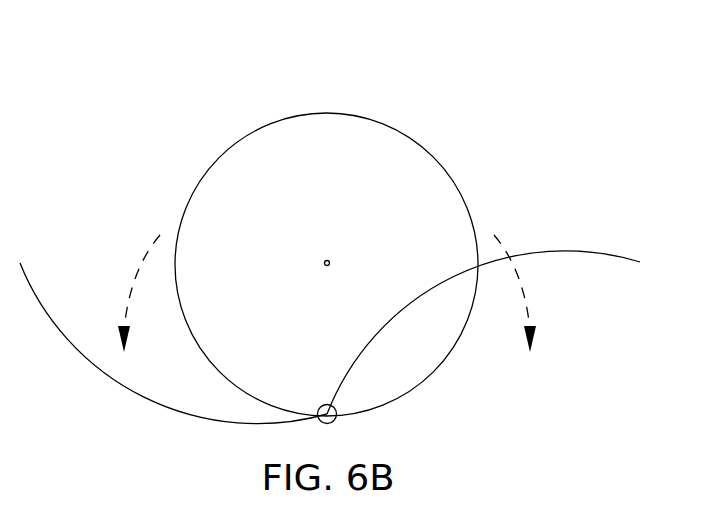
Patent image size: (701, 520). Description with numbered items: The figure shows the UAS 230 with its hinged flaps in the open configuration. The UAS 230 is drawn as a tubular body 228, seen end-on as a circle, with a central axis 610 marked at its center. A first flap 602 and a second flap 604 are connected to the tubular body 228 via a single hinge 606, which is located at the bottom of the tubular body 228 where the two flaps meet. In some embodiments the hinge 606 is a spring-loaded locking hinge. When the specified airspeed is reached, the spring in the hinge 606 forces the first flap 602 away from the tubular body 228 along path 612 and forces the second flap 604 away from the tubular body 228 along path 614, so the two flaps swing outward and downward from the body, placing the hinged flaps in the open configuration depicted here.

The UAS 230 is at (155, 55).
The tubular body 228 is at (326, 112).
The central axis 610 is at (327, 259).
The hinge 606 is at (327, 404).
The first flap 602 is at (143, 398).
The second flap 604 is at (510, 399).
The path 612 is at (147, 257).
The path 614 is at (507, 257).